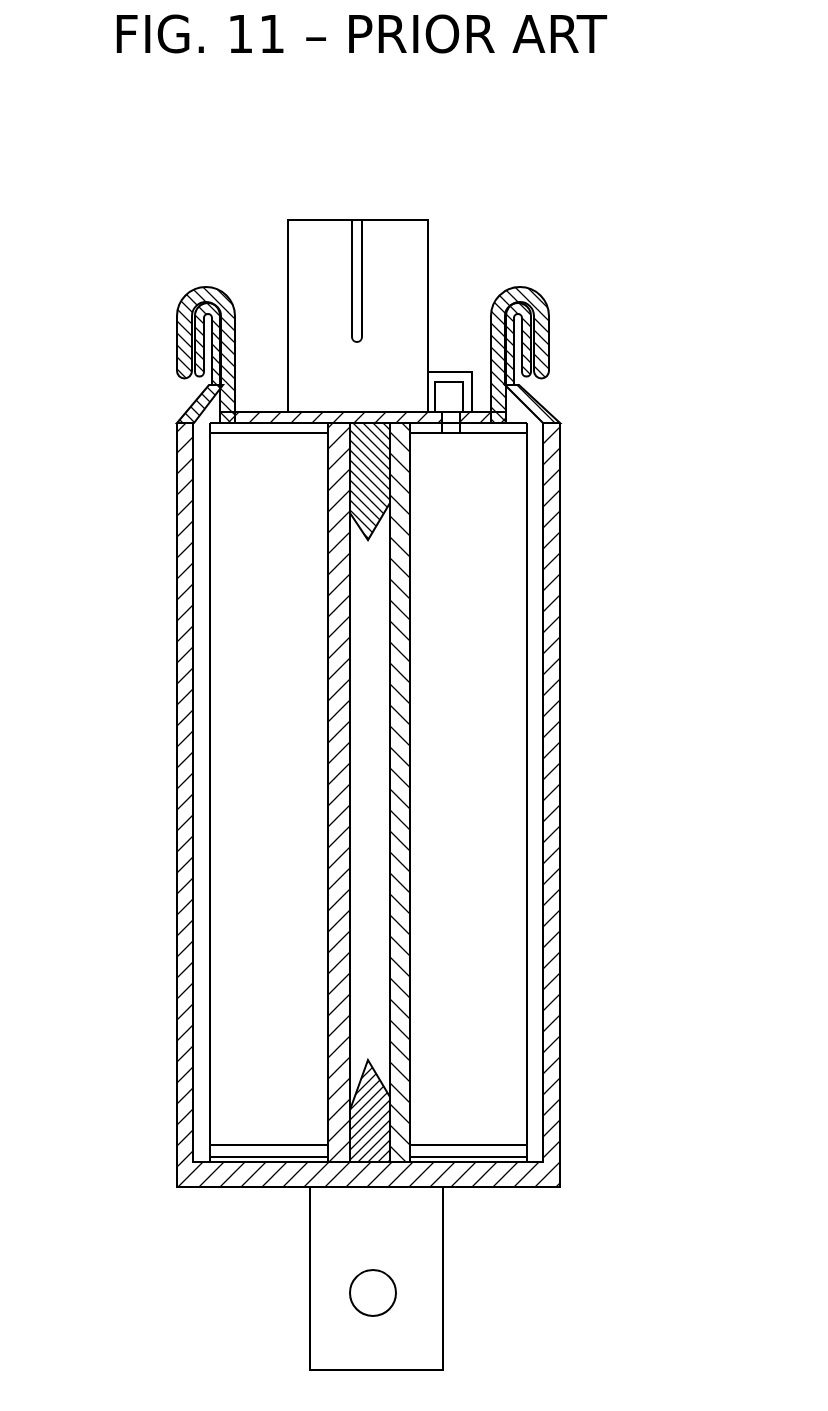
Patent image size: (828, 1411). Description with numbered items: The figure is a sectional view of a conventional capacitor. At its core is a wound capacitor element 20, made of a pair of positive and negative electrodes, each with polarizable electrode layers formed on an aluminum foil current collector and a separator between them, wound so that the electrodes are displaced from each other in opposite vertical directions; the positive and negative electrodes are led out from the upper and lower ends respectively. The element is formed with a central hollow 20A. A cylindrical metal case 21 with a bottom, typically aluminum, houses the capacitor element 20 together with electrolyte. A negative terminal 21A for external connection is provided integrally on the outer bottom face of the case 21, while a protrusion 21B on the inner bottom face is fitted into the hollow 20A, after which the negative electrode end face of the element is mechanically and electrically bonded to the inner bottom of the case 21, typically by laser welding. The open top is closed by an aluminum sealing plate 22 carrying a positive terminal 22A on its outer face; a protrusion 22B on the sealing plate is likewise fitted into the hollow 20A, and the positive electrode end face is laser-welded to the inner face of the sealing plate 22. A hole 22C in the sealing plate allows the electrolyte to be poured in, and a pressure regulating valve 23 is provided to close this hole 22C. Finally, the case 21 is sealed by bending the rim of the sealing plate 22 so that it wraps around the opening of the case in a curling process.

The capacitor element 20 is at (230, 757).
The hollow 20A is at (375, 935).
The case 21 is at (550, 725).
The negative terminal 21A is at (327, 1240).
The protrusion 21B is at (370, 1078).
The sealing plate 22 is at (370, 408).
The positive terminal 22A is at (318, 233).
The protrusion 22B is at (363, 468).
The hole 22C is at (455, 430).
The pressure regulating valve 23 is at (451, 372).